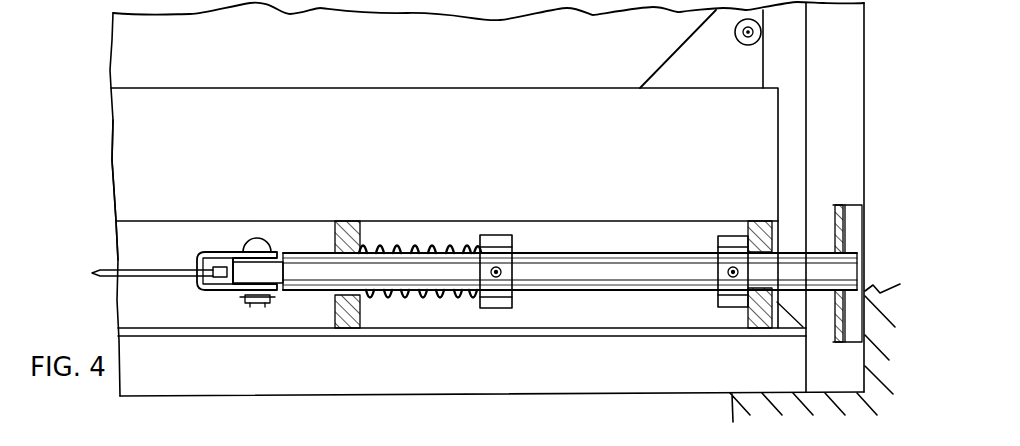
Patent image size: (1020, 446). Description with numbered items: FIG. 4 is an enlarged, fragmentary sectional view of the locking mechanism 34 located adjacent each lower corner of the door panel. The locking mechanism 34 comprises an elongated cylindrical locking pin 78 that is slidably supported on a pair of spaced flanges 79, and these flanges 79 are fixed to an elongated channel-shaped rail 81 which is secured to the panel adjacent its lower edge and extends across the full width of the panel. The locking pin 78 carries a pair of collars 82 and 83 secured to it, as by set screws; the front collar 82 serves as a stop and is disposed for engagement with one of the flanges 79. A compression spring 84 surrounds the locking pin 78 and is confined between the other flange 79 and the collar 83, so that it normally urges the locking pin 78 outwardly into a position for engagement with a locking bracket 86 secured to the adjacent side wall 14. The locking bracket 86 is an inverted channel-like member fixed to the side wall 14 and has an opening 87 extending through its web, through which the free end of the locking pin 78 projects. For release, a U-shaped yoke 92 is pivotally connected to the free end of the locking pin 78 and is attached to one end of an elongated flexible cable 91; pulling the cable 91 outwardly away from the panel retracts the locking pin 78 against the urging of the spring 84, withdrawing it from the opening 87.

The side wall 14 is at (878, 355).
The locking mechanism 34 is at (523, 170).
The locking pin 78 is at (670, 272).
The flanges 79 is at (348, 222).
The channel-shaped rail 81 is at (141, 243).
The front collar 82 is at (728, 296).
The collar 83 is at (502, 298).
The compression spring 84 is at (381, 247).
The locking bracket 86 is at (843, 224).
The opening 87 is at (834, 283).
The flexible cable 91 is at (118, 268).
The U-shaped yoke 92 is at (205, 290).